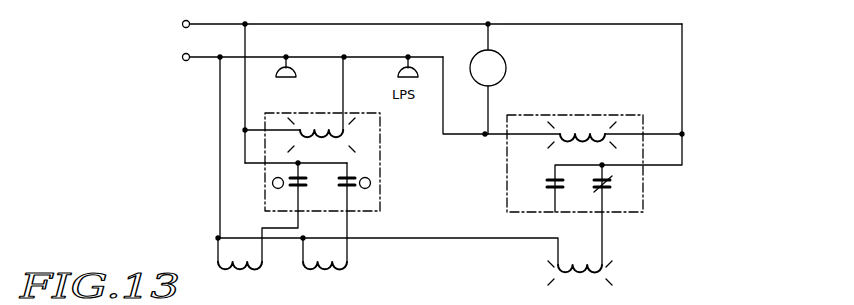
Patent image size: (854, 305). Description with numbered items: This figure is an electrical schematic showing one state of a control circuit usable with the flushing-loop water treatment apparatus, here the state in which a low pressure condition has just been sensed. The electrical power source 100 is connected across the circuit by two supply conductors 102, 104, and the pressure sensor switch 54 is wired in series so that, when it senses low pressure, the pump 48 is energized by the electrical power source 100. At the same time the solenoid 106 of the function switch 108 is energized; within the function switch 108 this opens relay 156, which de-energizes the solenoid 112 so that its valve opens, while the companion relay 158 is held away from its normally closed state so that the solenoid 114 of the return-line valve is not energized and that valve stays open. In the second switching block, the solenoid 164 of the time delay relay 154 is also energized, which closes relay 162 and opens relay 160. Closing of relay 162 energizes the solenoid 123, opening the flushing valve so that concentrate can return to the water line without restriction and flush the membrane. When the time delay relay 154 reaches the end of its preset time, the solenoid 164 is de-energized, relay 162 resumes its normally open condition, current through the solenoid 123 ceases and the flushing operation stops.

The electrical power source 100 is at (186, 61).
The lower supply conductor 102 is at (370, 57).
The upper supply conductor 104 is at (410, 29).
The pressure sensor switch 54 is at (297, 76).
The pump 48 is at (506, 62).
The solenoid of function switch 106 is at (350, 140).
The function switch 108 is at (380, 156).
The relay 158 is at (290, 188).
The relay 156 is at (350, 188).
The solenoid of valve 114 is at (218, 268).
The solenoid 112 is at (349, 270).
The time delay relay 154 is at (622, 115).
The solenoid of time delay relay 164 is at (575, 133).
The relay 160 is at (547, 188).
The relay 162 is at (610, 192).
The solenoid 123 is at (610, 276).